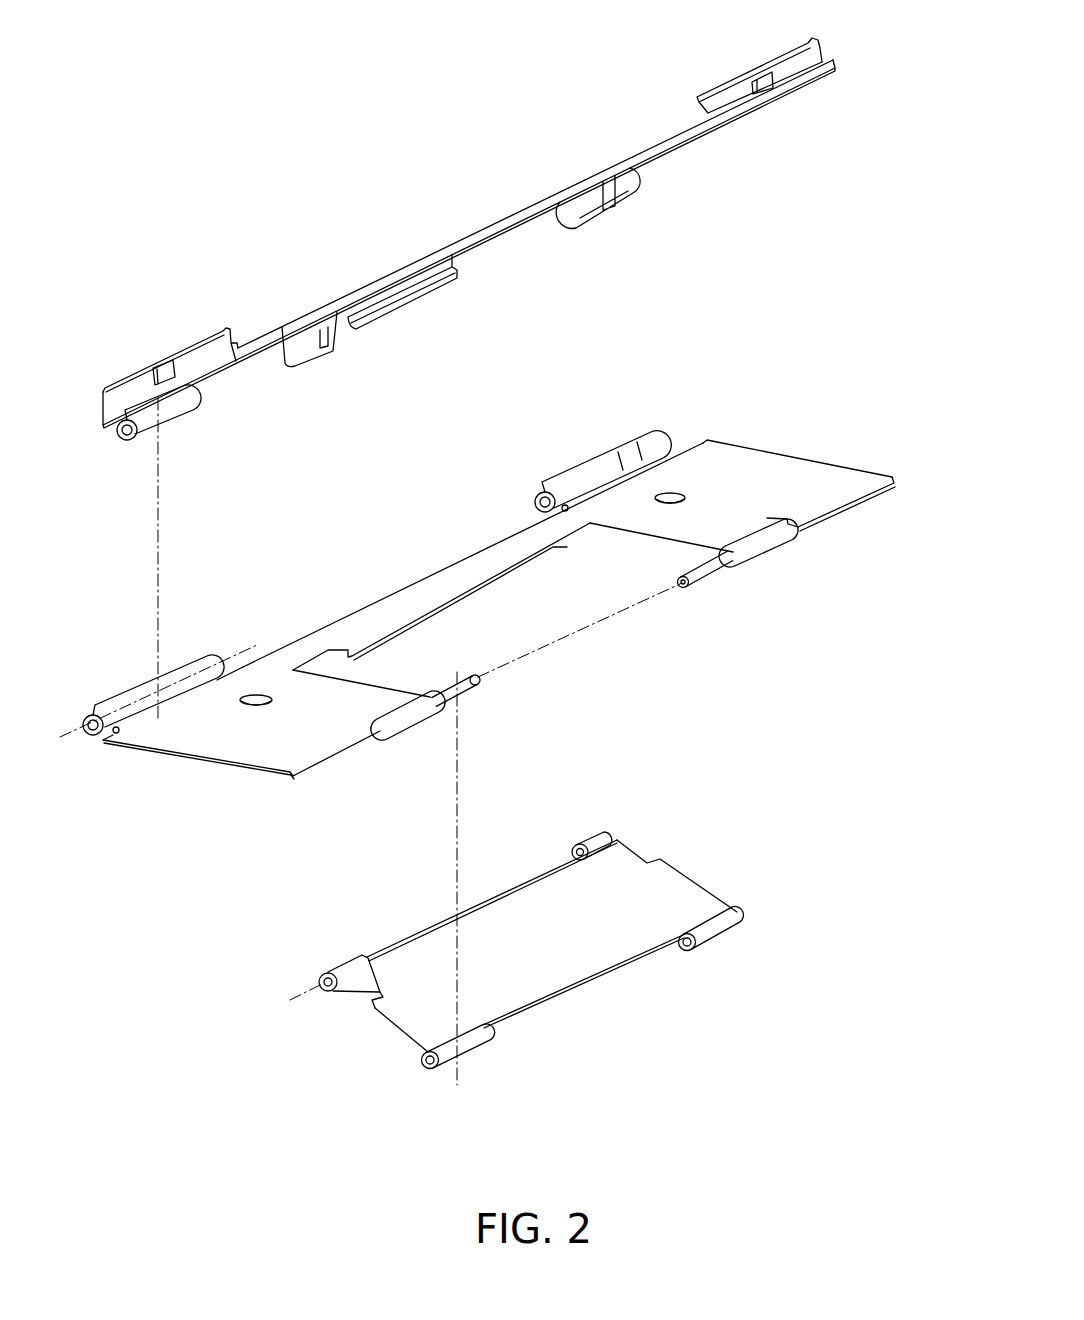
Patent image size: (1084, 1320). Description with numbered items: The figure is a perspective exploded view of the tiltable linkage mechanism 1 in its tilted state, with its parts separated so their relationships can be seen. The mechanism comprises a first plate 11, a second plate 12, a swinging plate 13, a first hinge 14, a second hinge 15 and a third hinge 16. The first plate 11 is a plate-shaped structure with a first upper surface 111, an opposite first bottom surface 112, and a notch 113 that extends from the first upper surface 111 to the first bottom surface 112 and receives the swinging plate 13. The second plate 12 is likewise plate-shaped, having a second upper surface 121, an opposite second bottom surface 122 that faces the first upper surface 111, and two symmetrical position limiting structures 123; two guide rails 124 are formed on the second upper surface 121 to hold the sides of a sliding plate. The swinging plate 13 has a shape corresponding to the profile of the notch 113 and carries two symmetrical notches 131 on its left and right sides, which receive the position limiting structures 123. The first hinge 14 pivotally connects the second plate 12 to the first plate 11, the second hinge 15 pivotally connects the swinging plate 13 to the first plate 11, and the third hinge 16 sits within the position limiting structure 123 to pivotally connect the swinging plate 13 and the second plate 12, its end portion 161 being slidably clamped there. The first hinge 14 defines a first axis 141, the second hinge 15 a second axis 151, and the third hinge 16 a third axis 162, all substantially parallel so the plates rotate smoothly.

The tiltable linkage mechanism 1 is at (382, 250).
The first plate 11 is at (498, 609).
The first upper surface 111 is at (832, 470).
The first bottom surface 112 is at (832, 520).
The notch 113 is at (500, 605).
The second plate 12 is at (469, 221).
The second upper surface 121 is at (655, 143).
The second bottom surface 122 is at (760, 112).
The position limiting structures 123 is at (622, 208).
The guide rails 124 is at (791, 65).
The swinging plate 13 is at (481, 922).
The notches 131 is at (655, 858).
The first hinge 14 is at (607, 472).
The first axis 141 is at (70, 738).
The second hinge 15 is at (712, 573).
The second axis 151 is at (550, 648).
The third hinge 16 is at (433, 889).
The end portion 161 is at (330, 975).
The third axis 162 is at (325, 993).